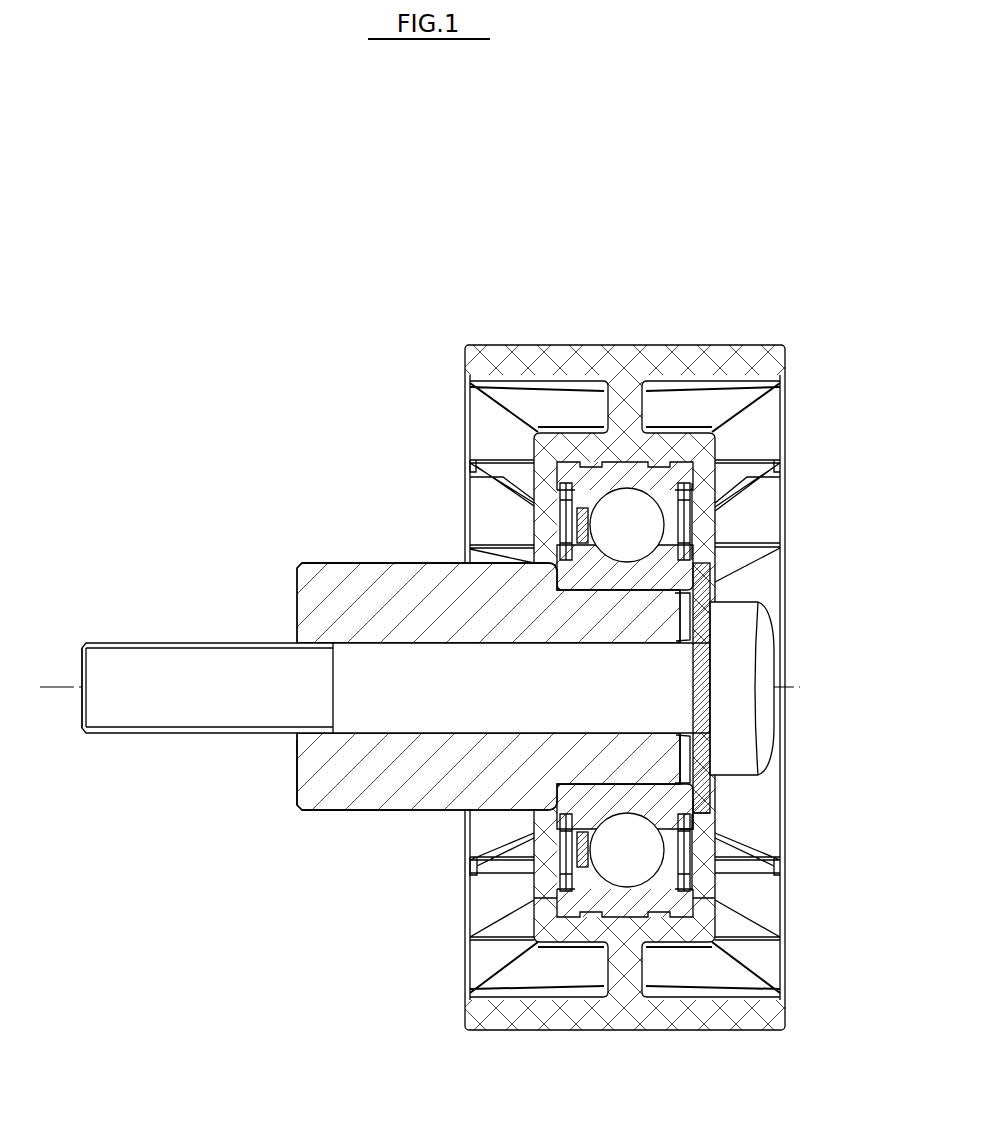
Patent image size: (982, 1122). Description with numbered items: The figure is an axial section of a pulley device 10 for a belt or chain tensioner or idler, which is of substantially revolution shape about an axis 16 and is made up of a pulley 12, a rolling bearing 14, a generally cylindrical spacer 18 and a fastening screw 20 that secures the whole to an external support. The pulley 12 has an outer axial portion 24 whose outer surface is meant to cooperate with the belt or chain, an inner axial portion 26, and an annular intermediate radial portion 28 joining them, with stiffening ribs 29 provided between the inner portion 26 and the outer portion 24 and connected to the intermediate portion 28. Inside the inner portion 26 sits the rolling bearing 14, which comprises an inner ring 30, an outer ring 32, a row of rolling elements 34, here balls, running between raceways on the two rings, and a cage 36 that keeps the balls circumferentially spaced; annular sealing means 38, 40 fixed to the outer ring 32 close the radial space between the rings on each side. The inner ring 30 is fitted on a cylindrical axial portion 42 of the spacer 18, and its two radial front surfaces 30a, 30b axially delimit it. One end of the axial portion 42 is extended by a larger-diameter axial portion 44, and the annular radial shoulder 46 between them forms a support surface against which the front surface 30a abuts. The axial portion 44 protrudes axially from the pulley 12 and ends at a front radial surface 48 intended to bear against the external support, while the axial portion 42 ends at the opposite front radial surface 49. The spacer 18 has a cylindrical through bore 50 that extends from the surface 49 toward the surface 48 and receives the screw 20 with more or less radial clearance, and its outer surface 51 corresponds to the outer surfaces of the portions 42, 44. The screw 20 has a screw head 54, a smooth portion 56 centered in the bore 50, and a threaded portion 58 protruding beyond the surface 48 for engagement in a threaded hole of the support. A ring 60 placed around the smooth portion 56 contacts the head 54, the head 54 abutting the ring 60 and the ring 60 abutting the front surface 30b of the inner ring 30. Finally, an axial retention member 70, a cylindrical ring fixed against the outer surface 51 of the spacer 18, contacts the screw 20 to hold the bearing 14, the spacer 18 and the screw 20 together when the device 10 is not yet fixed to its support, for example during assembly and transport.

The pulley device 10 is at (647, 292).
The pulley 12 is at (703, 346).
The rolling bearing 14 is at (695, 493).
The axis 16 is at (80, 660).
The spacer 18 is at (343, 563).
The fastening screw 20 is at (108, 734).
The outer axial portion 24 is at (785, 357).
The inner axial portion 26 is at (718, 449).
The annular intermediate radial portion 28 is at (627, 412).
The stiffening ribs 29 is at (760, 562).
The inner ring 30 is at (563, 557).
The front surface of inner ring 30a is at (563, 786).
The front surface of inner ring 30b is at (692, 812).
The outer ring 32 is at (580, 478).
The rolling elements 34 is at (612, 539).
The cage 36 is at (577, 530).
The annular sealing means 38 is at (700, 545).
The annular sealing means 40 is at (557, 502).
The cylindrical axial portion 42 is at (709, 768).
The cylindrical axial portion of larger diameter 44 is at (352, 798).
The annular radial shoulder 46 is at (563, 837).
The front radial surface 48 is at (297, 777).
The front radial surface 49 is at (697, 777).
The through bore 50 is at (302, 648).
The outer surface of spacer 51 is at (388, 562).
The screw head 54 is at (753, 663).
The smooth portion 56 is at (425, 663).
The threaded portion 58 is at (173, 712).
The ring 60 is at (703, 800).
The axial retention member 70 is at (695, 750).